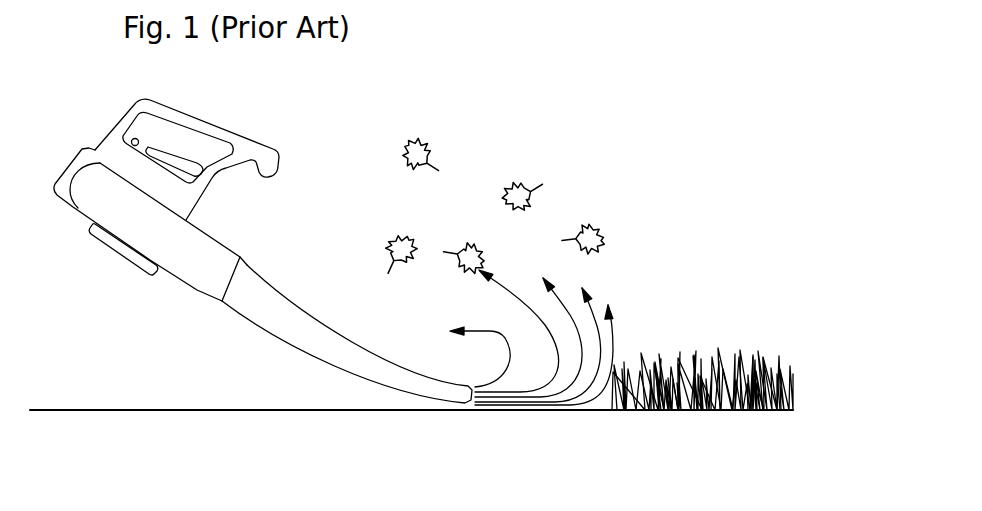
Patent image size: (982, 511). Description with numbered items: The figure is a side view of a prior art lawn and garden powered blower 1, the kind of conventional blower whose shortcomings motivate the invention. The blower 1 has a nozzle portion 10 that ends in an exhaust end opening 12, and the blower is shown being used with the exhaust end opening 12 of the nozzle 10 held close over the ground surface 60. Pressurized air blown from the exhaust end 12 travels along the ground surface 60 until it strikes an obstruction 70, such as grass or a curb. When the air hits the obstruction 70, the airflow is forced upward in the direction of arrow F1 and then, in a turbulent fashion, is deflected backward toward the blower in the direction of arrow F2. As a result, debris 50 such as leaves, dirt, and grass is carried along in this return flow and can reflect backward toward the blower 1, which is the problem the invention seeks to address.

The prior art lawn and garden powered blower 1 is at (460, 118).
The nozzle portion 10 is at (287, 308).
The exhaust end opening 12 is at (443, 390).
The debris 50 is at (438, 158).
The ground surface 60 is at (297, 410).
The obstruction 70 is at (792, 392).
The arrow F1 is at (544, 334).
The arrow F2 is at (480, 344).